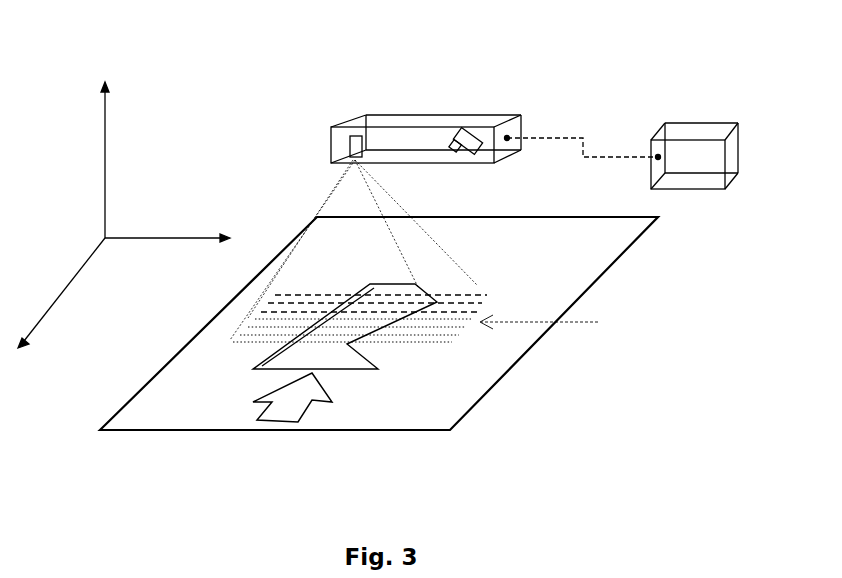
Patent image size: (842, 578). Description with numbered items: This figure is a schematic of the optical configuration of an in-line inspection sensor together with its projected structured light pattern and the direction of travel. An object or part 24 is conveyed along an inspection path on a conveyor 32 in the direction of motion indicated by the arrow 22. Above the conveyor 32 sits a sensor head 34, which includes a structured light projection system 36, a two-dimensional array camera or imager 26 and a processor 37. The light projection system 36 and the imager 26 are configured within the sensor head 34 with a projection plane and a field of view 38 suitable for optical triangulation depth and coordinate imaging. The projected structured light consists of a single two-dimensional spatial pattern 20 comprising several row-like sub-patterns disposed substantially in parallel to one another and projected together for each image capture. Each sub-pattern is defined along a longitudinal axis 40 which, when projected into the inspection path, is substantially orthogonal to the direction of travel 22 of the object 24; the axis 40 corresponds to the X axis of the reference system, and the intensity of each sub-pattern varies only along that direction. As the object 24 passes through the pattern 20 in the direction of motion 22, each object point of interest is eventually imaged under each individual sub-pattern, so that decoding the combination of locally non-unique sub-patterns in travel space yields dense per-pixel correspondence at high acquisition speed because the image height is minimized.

The two-dimensional spatial pattern 20 is at (553, 322).
The direction of motion 22 is at (280, 430).
The object 24 is at (382, 348).
The 2D array camera 26 is at (463, 128).
The conveyor 32 is at (632, 250).
The sensor head 34 is at (412, 112).
The structured light projection system 36 is at (350, 148).
The processor 37 is at (682, 192).
The field of view 38 is at (423, 263).
The longitudinal axis 40 is at (128, 242).